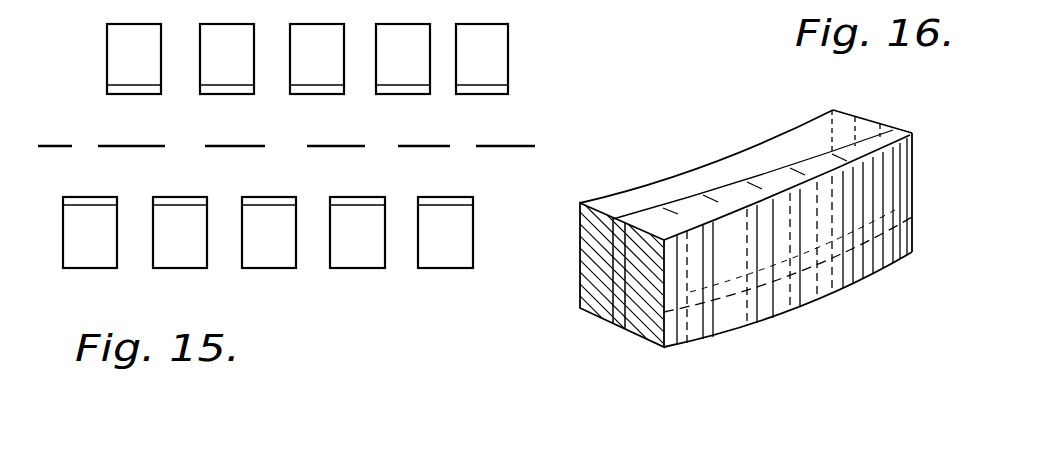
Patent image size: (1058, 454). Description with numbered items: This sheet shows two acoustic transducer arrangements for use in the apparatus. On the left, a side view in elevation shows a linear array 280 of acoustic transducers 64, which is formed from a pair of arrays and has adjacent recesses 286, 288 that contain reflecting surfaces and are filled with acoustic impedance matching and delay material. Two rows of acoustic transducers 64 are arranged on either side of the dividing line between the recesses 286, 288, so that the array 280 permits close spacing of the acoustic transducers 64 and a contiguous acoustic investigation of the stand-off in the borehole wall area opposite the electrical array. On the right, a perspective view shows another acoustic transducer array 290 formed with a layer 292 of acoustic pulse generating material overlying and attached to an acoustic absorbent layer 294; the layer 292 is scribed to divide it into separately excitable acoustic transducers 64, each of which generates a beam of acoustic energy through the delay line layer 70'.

In FIG. 15, the acoustic transducers 64 is at (508, 50).
In FIG. 16, the acoustic transducers 64 is at (772, 168).
In FIG. 15, the recess 286 is at (325, 132).
In FIG. 15, the recess 288 is at (325, 183).
In FIG. 15, the linear array 280 is at (512, 110).
In FIG. 16, the acoustic transducer array 290 is at (781, 127).
In FIG. 16, the delay line layer 70' is at (610, 274).
In FIG. 16, the layer of acoustic pulse generating material 292 is at (622, 325).
In FIG. 16, the acoustic absorbent layer 294 is at (650, 333).